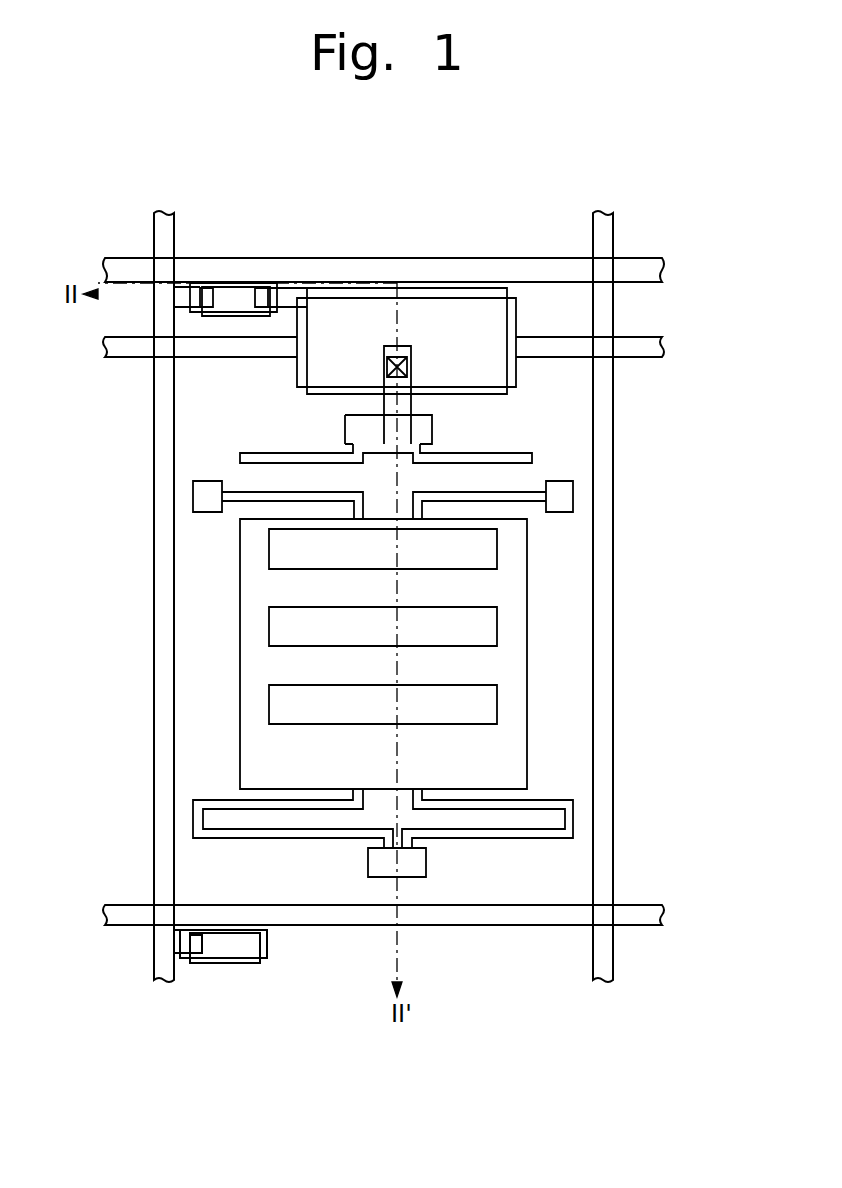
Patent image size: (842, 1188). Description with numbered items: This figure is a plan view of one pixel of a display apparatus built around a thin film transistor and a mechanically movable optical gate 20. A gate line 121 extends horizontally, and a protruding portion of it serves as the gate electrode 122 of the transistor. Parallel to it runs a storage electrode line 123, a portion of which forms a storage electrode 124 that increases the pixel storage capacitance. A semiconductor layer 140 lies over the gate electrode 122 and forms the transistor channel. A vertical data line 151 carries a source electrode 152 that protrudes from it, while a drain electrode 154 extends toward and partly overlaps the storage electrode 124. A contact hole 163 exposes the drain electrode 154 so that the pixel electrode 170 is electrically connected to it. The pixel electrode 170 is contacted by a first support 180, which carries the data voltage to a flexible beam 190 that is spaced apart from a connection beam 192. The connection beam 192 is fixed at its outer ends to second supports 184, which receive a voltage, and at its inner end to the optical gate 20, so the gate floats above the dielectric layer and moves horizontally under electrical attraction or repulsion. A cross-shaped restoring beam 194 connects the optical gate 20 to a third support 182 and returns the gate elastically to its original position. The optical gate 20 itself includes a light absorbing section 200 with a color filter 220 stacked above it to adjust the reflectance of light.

The optical gate 20 is at (528, 642).
The gate line 121 is at (660, 267).
The gate electrode 122 is at (242, 297).
The storage electrode line 123 is at (660, 345).
The storage electrode 124 is at (357, 313).
The semiconductor layer 140 is at (225, 280).
The data line 151 is at (605, 233).
The source electrode 152 is at (197, 297).
The drain electrode 154 is at (262, 298).
The contact hole 163 is at (405, 366).
The pixel electrode 170 is at (388, 406).
The first support 180 is at (423, 429).
The third support 182 is at (410, 866).
The second support 184 is at (204, 497).
The flexible beam 190 is at (532, 456).
The connection beam 192 is at (533, 497).
The restoring beam 194 is at (569, 820).
The light absorbing section 200 is at (510, 585).
The color filter 220 is at (483, 706).